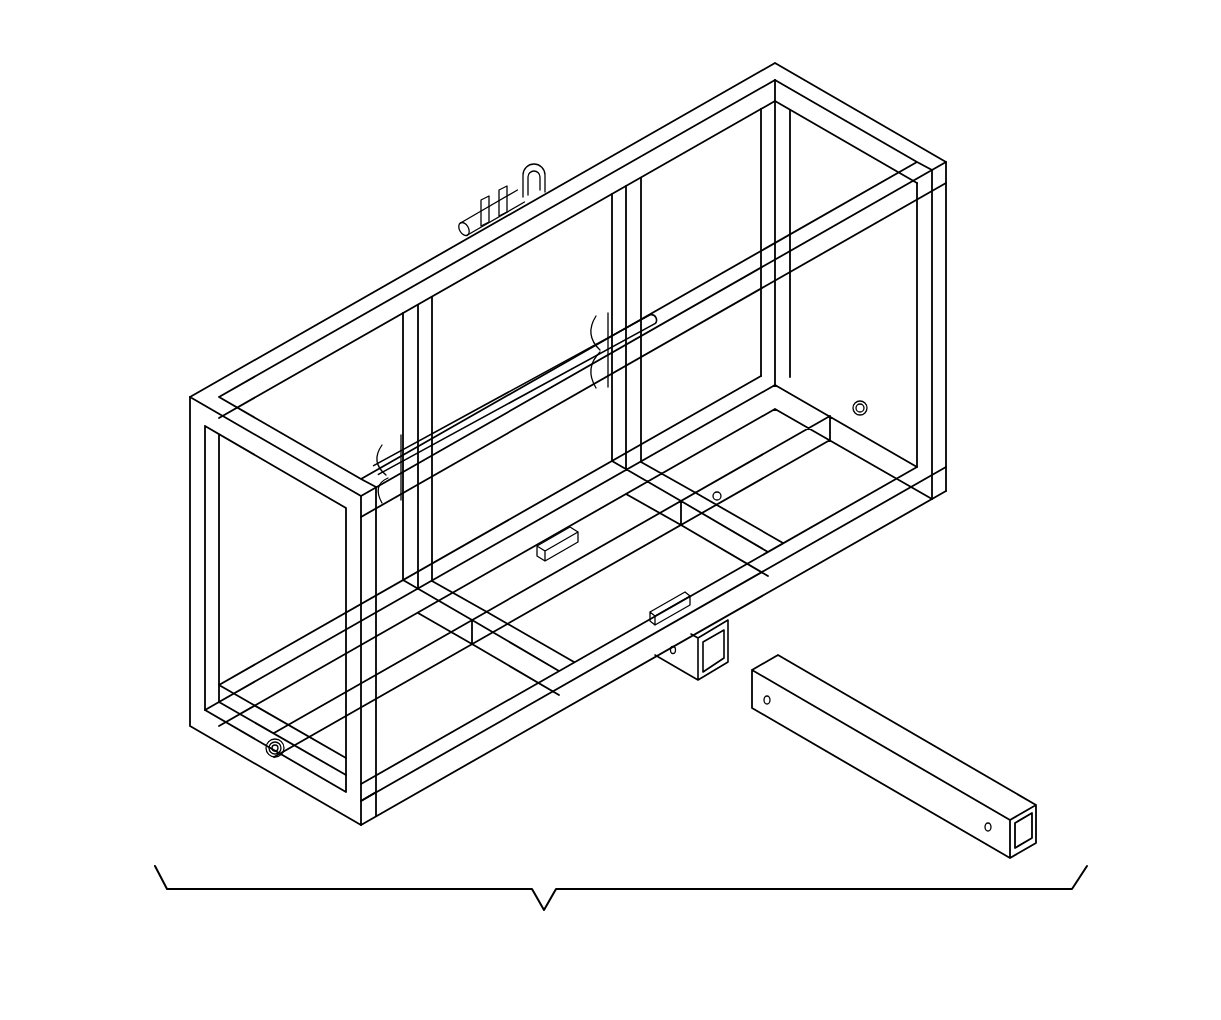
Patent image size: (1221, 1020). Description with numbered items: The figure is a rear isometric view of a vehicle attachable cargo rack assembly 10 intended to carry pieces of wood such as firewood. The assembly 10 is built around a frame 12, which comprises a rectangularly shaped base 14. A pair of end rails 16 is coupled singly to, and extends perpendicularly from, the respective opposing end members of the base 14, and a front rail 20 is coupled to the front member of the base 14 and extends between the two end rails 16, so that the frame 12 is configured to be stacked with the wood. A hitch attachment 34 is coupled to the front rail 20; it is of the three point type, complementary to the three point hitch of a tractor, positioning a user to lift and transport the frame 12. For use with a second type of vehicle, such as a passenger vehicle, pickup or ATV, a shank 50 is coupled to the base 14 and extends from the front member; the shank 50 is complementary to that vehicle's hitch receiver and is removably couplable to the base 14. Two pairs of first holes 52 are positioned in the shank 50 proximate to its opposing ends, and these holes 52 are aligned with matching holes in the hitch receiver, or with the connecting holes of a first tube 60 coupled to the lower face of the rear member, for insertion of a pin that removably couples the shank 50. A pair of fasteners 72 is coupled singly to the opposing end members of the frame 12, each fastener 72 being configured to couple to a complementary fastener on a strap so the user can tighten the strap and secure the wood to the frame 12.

The vehicle attachable cargo rack assembly 10 is at (1037, 158).
The frame 12 is at (903, 510).
The base 14 is at (845, 537).
The end rails 16 is at (855, 135).
The front rail 20 is at (380, 287).
The hitch attachment 34 is at (523, 393).
The shank 50 is at (923, 737).
The first holes 52 is at (780, 705).
The first tube 60 is at (737, 623).
The fasteners 72 is at (718, 497).